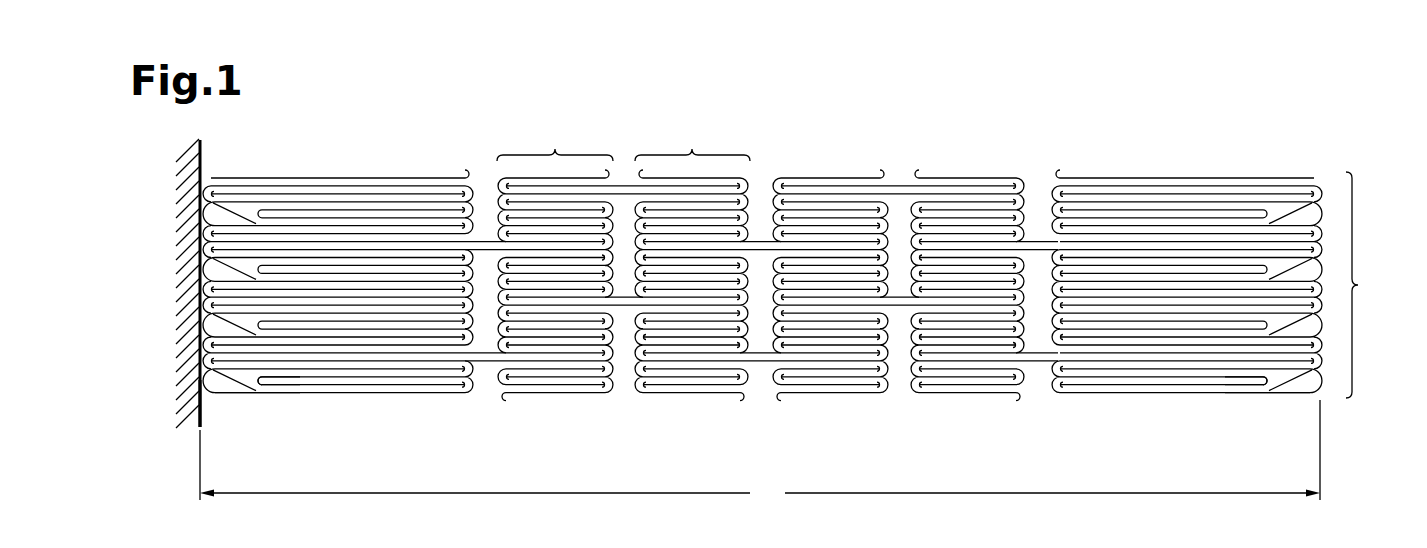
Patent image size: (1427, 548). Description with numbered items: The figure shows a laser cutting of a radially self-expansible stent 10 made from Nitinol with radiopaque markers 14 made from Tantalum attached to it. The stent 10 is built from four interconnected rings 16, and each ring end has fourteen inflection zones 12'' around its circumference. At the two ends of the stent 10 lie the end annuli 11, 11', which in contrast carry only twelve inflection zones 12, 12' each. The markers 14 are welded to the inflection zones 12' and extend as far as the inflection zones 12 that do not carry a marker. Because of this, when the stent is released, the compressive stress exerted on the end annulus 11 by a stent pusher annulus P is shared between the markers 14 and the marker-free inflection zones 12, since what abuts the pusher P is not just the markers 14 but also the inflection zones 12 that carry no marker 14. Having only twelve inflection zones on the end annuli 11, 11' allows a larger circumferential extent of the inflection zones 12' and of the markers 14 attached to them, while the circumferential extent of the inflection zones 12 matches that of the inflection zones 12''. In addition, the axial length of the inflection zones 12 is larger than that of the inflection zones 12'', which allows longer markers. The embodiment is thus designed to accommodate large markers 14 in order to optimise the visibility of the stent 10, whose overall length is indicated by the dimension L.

The radially self-expansible stent 10 is at (745, 243).
The end annulus 11 is at (230, 432).
The end annulus 11' is at (1381, 285).
The inflection zone 12 is at (763, 250).
The inflection zone 12' is at (756, 413).
The inflection zone 12'' is at (923, 254).
The radiopaque marker 14 is at (215, 382).
The interconnected ring 16 is at (623, 254).
The stent pusher annulus P is at (194, 203).
The stent length L is at (760, 454).